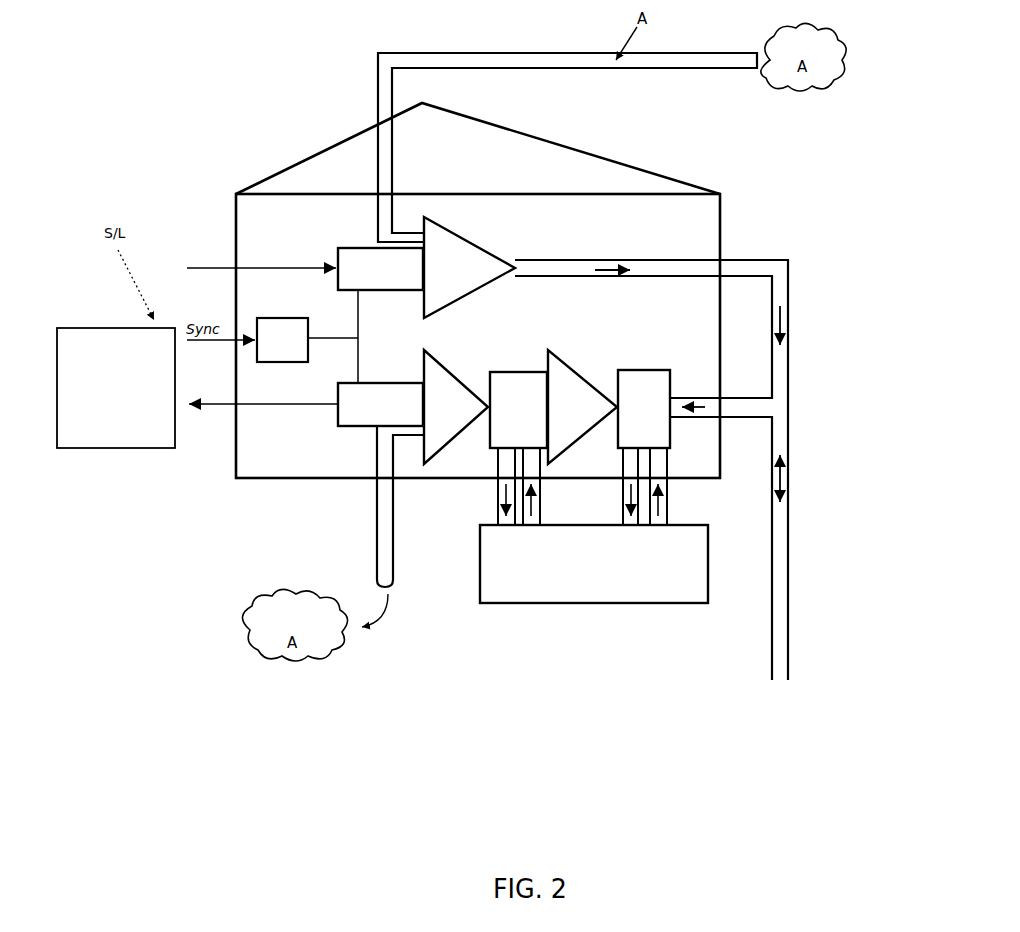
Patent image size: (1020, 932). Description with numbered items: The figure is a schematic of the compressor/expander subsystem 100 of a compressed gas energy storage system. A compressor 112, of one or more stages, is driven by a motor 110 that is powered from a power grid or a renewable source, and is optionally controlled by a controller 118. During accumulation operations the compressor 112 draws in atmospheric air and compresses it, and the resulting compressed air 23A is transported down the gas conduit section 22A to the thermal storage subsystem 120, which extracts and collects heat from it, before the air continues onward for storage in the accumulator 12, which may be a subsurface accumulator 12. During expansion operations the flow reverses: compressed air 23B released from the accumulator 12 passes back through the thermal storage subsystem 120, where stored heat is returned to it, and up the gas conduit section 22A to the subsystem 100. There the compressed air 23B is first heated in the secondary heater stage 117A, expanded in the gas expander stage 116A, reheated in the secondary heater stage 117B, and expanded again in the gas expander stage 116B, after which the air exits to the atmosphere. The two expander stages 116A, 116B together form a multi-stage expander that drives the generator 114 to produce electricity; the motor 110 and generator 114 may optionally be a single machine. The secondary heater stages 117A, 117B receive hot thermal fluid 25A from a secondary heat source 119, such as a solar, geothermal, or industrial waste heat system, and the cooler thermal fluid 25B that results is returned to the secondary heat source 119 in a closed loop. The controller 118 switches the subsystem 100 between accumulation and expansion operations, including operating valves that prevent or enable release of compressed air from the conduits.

The compressor/expander subsystem 100 is at (702, 164).
The motor 110 is at (380, 269).
The compressor 112 is at (469, 267).
The generator 114 is at (380, 404).
The controller 118 is at (282, 340).
The gas expander stage 116A is at (582, 407).
The gas expander stage 116B is at (456, 407).
The secondary heater stage 117A is at (657, 370).
The secondary heater stage 117B is at (518, 372).
The secondary heat source 119 is at (594, 564).
The gas conduit section 22A is at (790, 627).
The compressed air 23A is at (608, 263).
The compressed air 23B is at (697, 414).
The hot thermal fluid 25A is at (533, 503).
The cooler thermal fluid 25B is at (497, 496).
The thermal storage subsystem 120 is at (811, 735).
The accumulator 12 is at (738, 782).